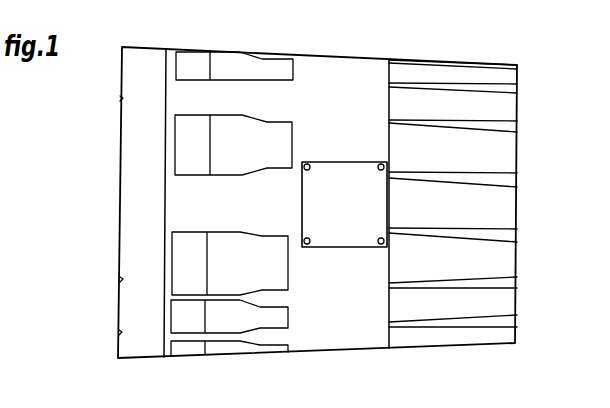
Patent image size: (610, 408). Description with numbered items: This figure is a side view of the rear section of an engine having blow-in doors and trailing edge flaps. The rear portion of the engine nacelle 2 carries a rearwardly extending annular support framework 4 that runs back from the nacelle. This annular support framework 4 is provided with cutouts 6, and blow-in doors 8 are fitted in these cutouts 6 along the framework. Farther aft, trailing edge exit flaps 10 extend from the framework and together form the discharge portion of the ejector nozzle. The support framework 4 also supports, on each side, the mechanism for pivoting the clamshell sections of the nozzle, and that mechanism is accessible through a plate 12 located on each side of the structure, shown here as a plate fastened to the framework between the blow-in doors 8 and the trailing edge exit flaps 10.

The engine nacelle 2 is at (145, 53).
The annular support framework 4 is at (355, 40).
The cutouts 6 is at (223, 116).
The blow-in doors 8 is at (221, 166).
The trailing edge exit flaps 10 is at (510, 80).
The plate 12 is at (340, 233).